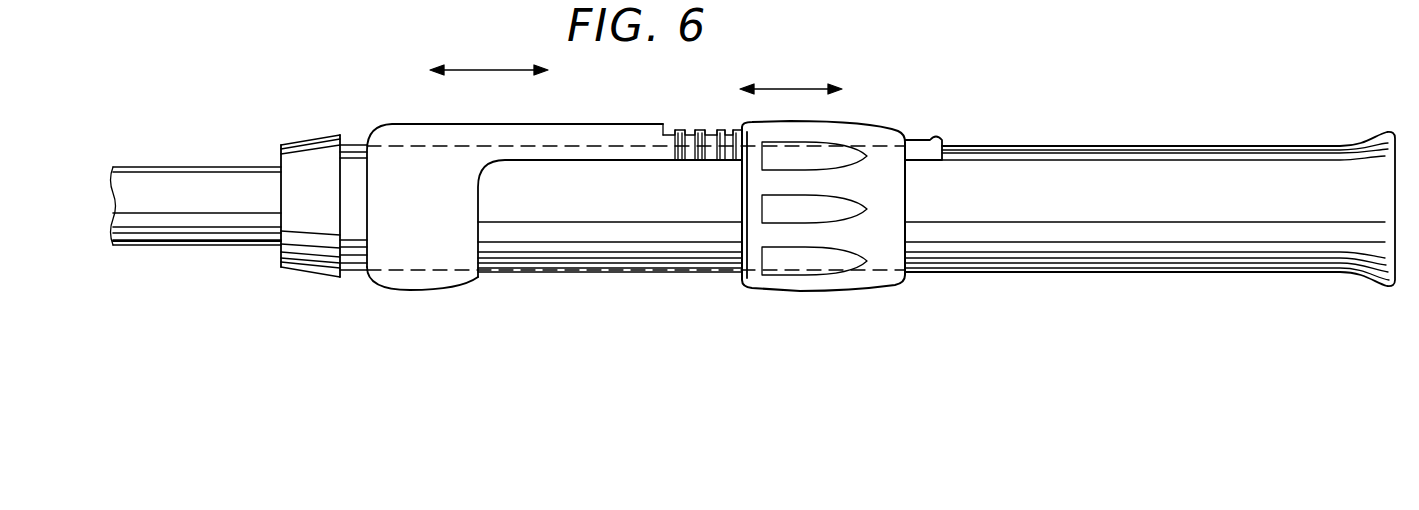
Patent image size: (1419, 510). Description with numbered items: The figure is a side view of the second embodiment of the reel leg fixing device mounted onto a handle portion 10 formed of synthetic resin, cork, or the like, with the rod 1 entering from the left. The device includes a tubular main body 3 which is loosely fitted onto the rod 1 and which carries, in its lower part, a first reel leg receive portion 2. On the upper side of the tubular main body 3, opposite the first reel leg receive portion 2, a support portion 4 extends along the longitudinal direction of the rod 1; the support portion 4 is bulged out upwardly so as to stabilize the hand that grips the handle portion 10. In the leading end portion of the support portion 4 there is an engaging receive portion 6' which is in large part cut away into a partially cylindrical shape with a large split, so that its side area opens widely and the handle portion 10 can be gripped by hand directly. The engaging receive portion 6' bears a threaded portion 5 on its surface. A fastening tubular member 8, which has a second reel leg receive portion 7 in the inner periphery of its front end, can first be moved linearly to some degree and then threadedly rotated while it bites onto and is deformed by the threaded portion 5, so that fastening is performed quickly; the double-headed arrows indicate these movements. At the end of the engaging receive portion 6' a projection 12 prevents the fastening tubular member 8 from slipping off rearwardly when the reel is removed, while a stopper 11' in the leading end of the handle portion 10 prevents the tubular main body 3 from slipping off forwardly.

The rod 1 is at (230, 188).
The stopper 11' is at (324, 177).
The tubular main body 3 is at (422, 136).
The first reel leg receive portion 2 is at (485, 277).
The support portion 4 is at (623, 138).
The engaging receive portion 6' is at (689, 119).
The threaded portion 5 is at (725, 135).
The fastening tubular member 8 is at (878, 253).
The second reel leg receive portion 7 is at (747, 280).
The projection 12 is at (933, 138).
The handle portion 10 is at (1057, 165).